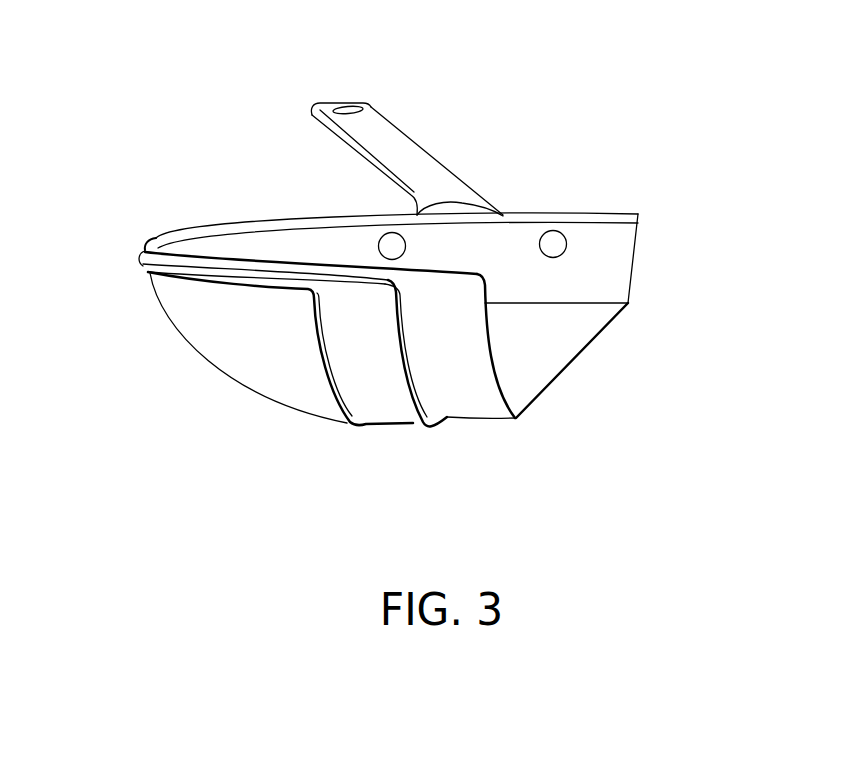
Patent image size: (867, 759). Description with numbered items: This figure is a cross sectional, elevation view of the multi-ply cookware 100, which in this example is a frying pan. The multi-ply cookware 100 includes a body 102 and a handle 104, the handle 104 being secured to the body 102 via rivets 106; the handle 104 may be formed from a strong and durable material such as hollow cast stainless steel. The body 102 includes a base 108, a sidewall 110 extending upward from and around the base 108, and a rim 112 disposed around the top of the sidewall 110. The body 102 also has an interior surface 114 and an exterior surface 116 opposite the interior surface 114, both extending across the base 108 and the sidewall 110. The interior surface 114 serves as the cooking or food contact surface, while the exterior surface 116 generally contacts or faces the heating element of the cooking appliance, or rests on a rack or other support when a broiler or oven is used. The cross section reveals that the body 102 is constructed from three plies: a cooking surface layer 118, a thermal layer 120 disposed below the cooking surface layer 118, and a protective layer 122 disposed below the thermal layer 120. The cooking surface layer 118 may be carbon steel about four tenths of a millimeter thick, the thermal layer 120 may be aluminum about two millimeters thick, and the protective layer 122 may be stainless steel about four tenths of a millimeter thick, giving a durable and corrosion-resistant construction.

The multi-ply cookware 100 is at (682, 162).
The body 102 is at (634, 456).
The handle 104 is at (339, 90).
The rivets 106 is at (390, 249).
The base 108 is at (570, 347).
The sidewall 110 is at (603, 226).
The rim 112 is at (122, 250).
The interior surface 114 is at (520, 387).
The exterior surface 116 is at (183, 300).
The cooking surface layer 118 is at (427, 373).
The thermal layer 120 is at (342, 373).
The protective layer 122 is at (267, 373).